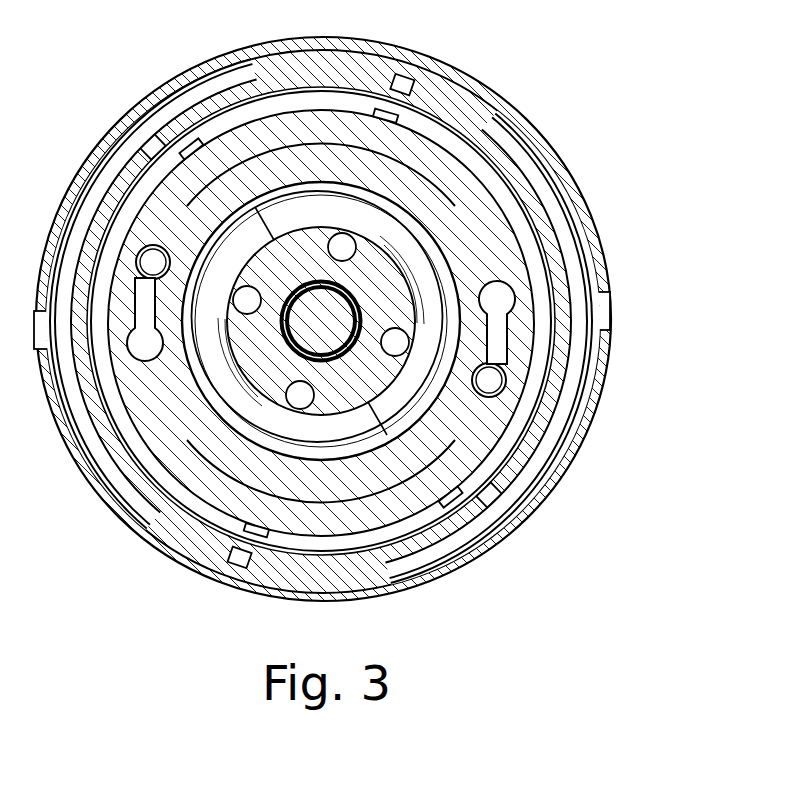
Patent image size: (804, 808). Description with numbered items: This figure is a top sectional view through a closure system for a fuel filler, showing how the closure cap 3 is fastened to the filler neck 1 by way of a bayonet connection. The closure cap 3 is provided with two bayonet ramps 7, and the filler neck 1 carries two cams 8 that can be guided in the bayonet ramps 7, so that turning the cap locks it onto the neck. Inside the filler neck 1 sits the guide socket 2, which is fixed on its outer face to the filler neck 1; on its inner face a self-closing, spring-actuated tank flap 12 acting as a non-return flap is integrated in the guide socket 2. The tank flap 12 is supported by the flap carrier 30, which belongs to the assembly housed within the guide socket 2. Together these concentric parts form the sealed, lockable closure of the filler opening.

The filler neck 1 is at (590, 238).
The guide socket 2 is at (427, 116).
The closure cap 3 is at (412, 557).
The bayonet ramps 7 is at (542, 454).
The cams 8 is at (590, 317).
The tank flap 12 is at (377, 225).
The flap carrier 30 is at (460, 246).